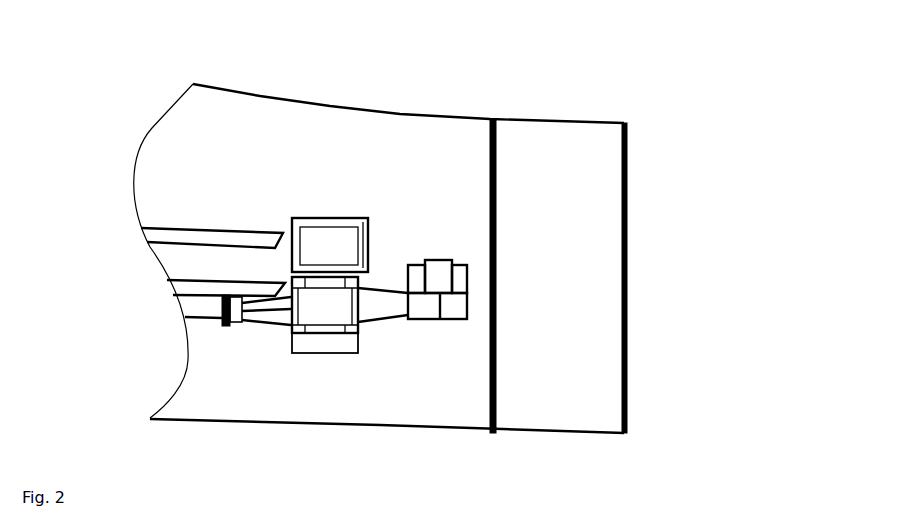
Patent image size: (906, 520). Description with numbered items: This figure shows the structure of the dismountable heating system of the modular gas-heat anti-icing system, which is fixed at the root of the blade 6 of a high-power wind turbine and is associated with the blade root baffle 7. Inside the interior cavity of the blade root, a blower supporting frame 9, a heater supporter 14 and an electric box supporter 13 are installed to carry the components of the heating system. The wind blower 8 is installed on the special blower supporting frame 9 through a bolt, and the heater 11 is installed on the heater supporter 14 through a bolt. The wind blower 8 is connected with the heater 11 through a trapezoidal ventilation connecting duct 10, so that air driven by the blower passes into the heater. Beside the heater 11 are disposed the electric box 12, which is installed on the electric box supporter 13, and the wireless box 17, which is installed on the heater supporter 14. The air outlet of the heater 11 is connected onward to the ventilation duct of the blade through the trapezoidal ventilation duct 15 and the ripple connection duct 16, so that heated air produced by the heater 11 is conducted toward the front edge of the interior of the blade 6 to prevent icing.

The blade 6 is at (685, 231).
The blade root baffle 7 is at (610, 231).
The wind blower 8 is at (533, 176).
The blower supporting frame 9 is at (500, 163).
The trapezoidal ventilation connecting duct 10 is at (444, 177).
The heater 11 is at (381, 182).
The electric box 12 is at (351, 152).
The electric box supporter 13 is at (320, 182).
The heater supporter 14 is at (212, 140).
The trapezoidal ventilation duct 15 is at (212, 164).
The connection duct 16 is at (183, 177).
The wireless box 17 is at (225, 381).